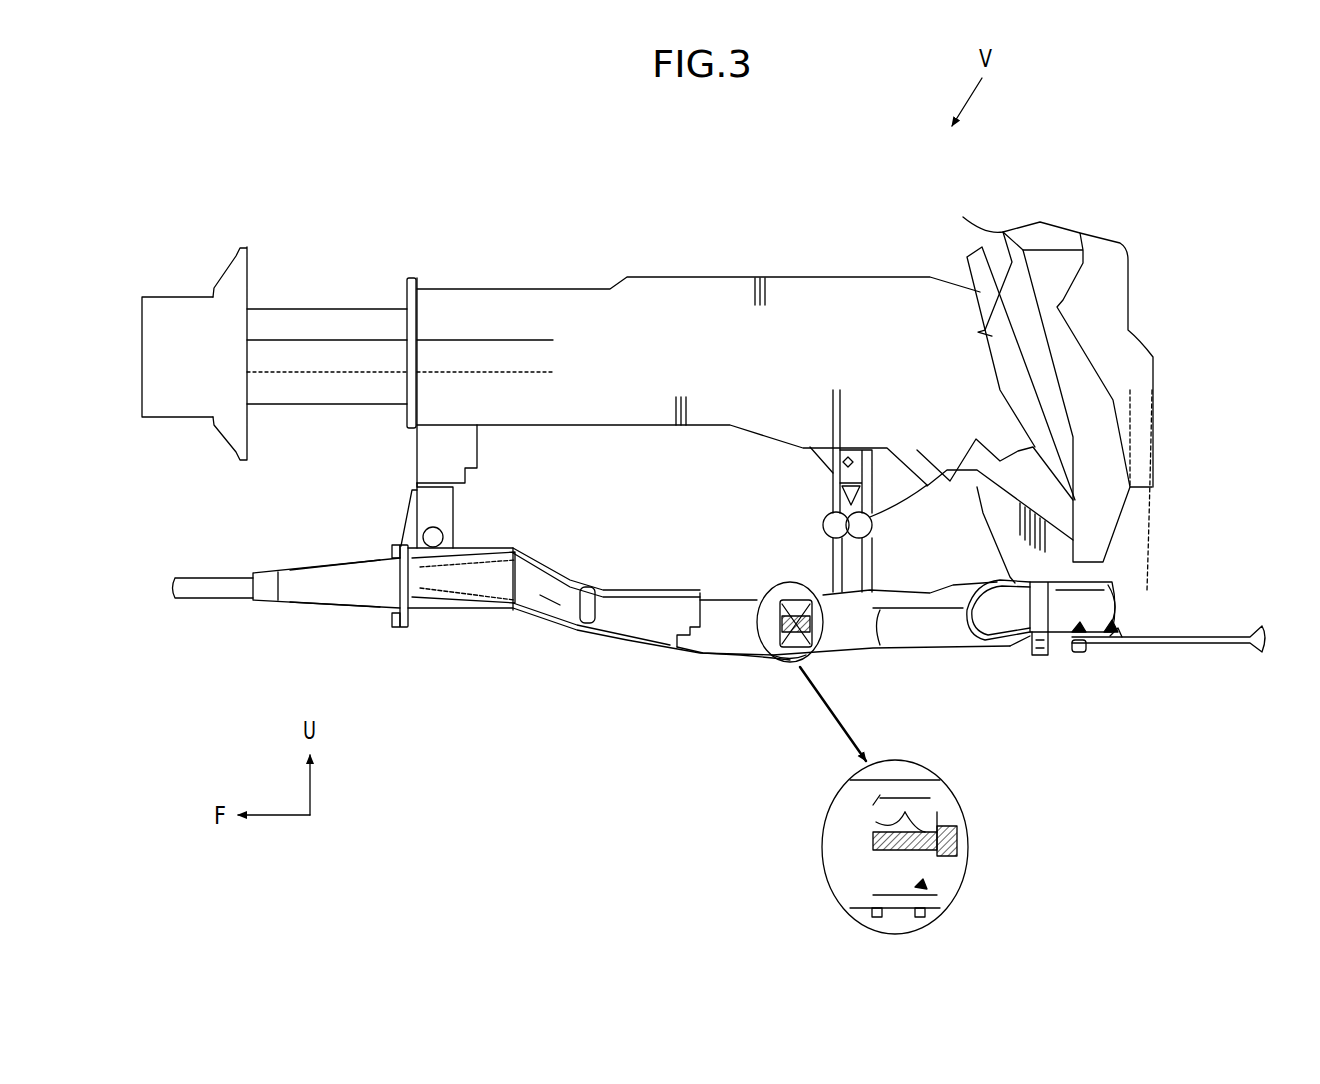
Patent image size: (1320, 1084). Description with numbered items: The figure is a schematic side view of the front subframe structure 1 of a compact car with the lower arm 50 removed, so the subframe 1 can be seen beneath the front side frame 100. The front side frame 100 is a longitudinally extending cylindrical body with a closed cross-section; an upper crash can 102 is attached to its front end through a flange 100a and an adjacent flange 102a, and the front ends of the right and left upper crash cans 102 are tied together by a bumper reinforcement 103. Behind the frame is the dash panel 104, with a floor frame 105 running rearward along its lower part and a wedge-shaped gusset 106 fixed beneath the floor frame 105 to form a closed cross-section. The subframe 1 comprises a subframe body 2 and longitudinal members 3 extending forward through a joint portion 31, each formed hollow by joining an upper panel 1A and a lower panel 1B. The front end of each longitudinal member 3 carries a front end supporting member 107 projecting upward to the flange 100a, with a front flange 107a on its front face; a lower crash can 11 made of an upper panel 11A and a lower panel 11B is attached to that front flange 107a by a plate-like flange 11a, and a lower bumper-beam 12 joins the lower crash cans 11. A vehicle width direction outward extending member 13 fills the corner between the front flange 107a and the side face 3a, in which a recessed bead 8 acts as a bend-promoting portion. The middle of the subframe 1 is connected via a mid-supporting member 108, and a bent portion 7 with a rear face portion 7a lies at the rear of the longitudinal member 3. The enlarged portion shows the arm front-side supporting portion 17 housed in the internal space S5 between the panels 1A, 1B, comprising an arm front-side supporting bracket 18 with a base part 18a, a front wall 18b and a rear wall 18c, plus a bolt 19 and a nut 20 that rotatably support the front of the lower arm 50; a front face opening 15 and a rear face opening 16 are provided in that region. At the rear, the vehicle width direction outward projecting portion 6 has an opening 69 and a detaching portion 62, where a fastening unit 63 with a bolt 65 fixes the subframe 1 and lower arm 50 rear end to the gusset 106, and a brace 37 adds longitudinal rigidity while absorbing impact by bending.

The front subframe structure 1 is at (520, 697).
The upper panel 1A is at (1113, 596).
The lower panel 1B is at (1112, 608).
The subframe body 2 is at (915, 577).
The longitudinal member 3 is at (577, 560).
The side face 3a is at (560, 616).
The vehicle width direction outward projecting portion 6 is at (1116, 630).
The bent portion 7 is at (746, 660).
The rear face portion 7a is at (850, 848).
The recessed bead 8 is at (598, 600).
The lower crash can 11 is at (318, 562).
The upper panel 11A is at (298, 565).
The lower panel 11B is at (325, 607).
The flange 11a is at (396, 588).
The lower bumper-beam 12 is at (205, 575).
The vehicle width direction outward extending member 13 is at (448, 610).
The front face opening 15 is at (890, 796).
The rear face opening 16 is at (912, 778).
The arm front-side supporting portion 17 is at (778, 596).
The arm front-side supporting bracket 18 is at (780, 622).
The base part 18a is at (902, 910).
The front wall 18b is at (873, 815).
The rear wall 18c is at (934, 802).
The bolt 19 is at (912, 850).
The nut 20 is at (952, 836).
The joint portion 31 is at (772, 658).
The brace 37 is at (1180, 646).
The lower arm 50 is at (932, 650).
The detaching portion 62 is at (1099, 656).
The fastening unit 63 is at (1064, 655).
The bolt 65 is at (1040, 656).
The opening 69 is at (1083, 613).
The front side frame 100 is at (816, 276).
The flange 100a is at (422, 300).
The upper crash can 102 is at (285, 305).
The flange 102a is at (405, 292).
The bumper reinforcement 103 is at (172, 418).
The dash panel 104 is at (1000, 380).
The floor frame 105 is at (968, 452).
The gusset 106 is at (990, 514).
The front end supporting member 107 is at (462, 512).
The front flange 107a is at (410, 510).
The mid-supporting member 108 is at (832, 562).
The internal space S5 is at (882, 794).